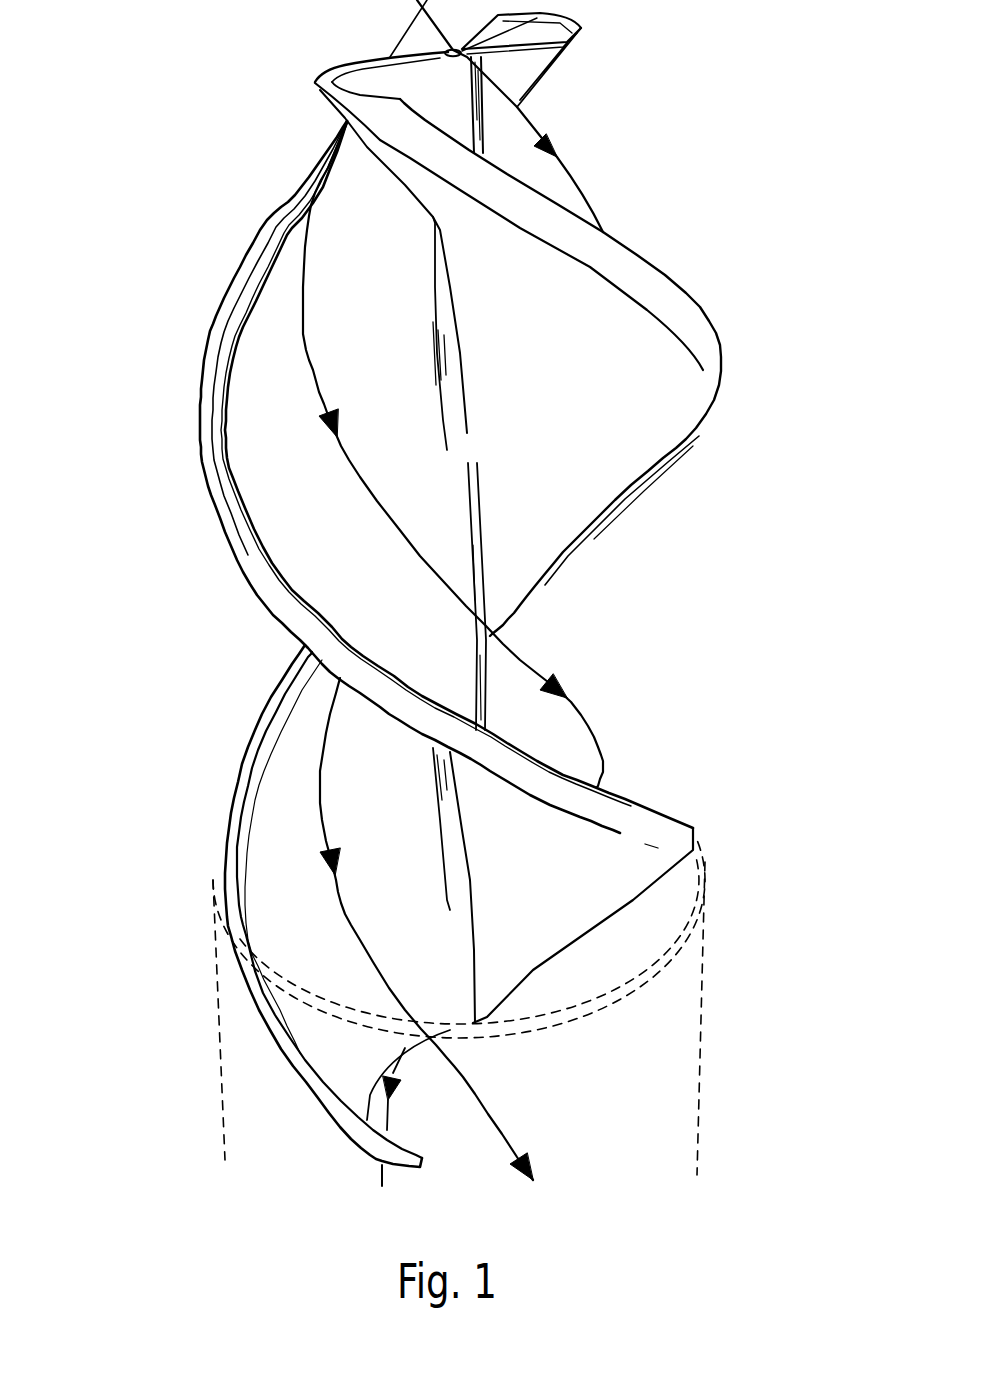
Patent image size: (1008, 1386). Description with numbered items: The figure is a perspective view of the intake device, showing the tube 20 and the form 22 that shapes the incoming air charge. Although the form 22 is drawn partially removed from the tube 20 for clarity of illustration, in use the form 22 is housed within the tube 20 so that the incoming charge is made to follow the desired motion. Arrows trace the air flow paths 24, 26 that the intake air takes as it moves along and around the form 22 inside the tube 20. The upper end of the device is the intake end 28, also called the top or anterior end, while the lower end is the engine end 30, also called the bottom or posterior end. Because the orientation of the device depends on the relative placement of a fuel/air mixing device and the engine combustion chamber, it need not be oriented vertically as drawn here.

The tube 20 is at (692, 1040).
The form 22 is at (593, 463).
The air flow path 24 is at (360, 477).
The air flow path 26 is at (570, 172).
The intake end 28 is at (325, 38).
The engine end 30 is at (249, 1146).